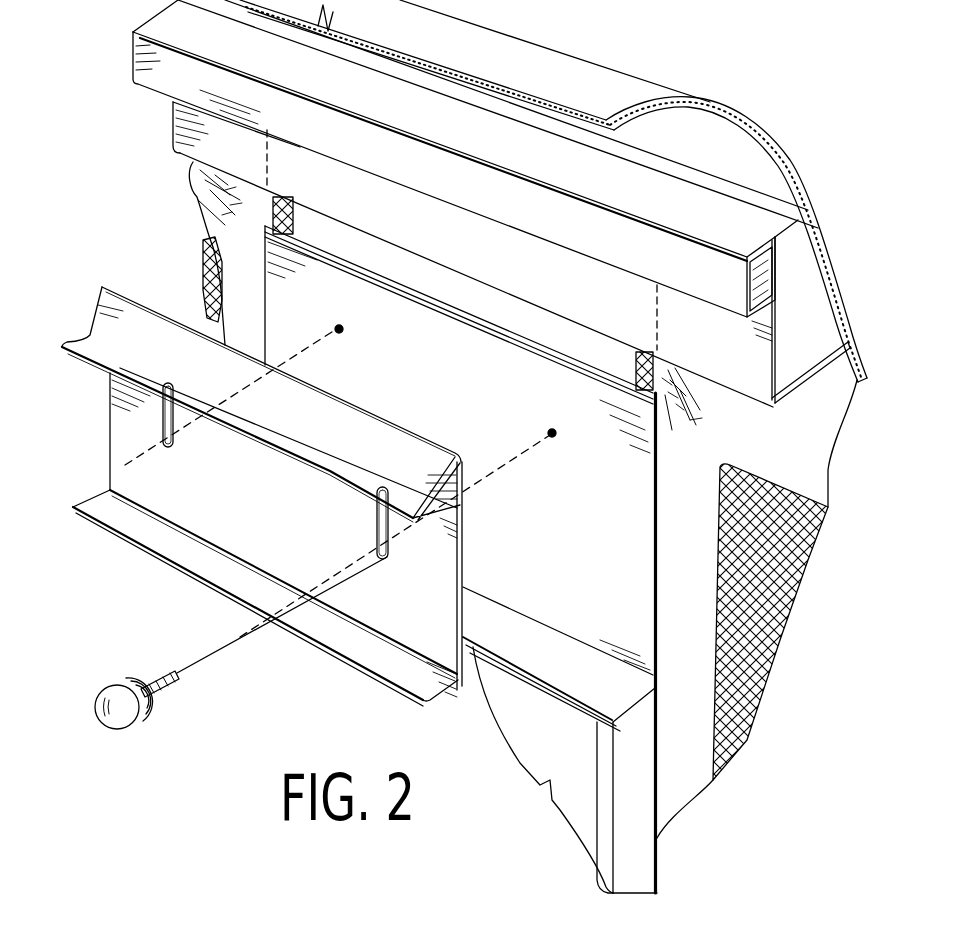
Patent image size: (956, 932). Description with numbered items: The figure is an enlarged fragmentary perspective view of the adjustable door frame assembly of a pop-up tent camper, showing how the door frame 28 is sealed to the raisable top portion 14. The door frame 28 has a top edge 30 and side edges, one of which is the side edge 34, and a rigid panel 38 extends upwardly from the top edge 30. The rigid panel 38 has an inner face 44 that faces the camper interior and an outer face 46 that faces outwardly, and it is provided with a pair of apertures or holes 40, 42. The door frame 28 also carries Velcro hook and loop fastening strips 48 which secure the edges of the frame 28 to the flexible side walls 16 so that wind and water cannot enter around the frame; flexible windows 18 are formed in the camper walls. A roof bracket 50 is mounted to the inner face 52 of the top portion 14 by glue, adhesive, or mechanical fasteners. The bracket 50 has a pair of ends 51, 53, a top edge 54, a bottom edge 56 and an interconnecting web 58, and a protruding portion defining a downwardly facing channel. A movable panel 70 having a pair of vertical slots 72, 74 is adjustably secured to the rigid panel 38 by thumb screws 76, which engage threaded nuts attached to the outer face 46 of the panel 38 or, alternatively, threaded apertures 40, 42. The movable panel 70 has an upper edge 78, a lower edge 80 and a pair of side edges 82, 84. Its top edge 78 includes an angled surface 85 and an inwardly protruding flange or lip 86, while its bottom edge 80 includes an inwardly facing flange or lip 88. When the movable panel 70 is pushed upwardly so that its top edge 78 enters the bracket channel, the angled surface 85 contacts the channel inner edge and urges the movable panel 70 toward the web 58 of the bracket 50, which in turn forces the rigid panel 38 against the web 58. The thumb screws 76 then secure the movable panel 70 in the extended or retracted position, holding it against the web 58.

The top portion 14 is at (728, 107).
The flexible side walls 16 is at (827, 480).
The flexible windows 18 is at (797, 577).
The door frame 28 is at (657, 786).
The top edge 30 is at (570, 670).
The side edge 34 is at (633, 862).
The rigid panel 38 is at (660, 503).
The aperture 40 is at (553, 428).
The aperture 42 is at (342, 325).
The inner face 44 is at (605, 515).
The outer face 46 is at (455, 307).
The hook and loop fastening strips 48 is at (690, 325).
The roof bracket 50 is at (805, 393).
The end 51 is at (780, 310).
The inner face 52 is at (790, 257).
The end 53 is at (173, 105).
The top edge 54 is at (730, 220).
The bottom edge 56 is at (850, 375).
The web 58 is at (750, 350).
The movable panel 70 is at (285, 496).
The vertical slot 72 is at (388, 560).
The vertical slot 74 is at (118, 527).
The thumb screw 76 is at (133, 730).
The upper edge 78 is at (327, 390).
The lower edge 80 is at (152, 558).
The side edge 82 is at (462, 558).
The side edge 84 is at (110, 405).
The angled surface 85 is at (373, 445).
The inwardly protruding flange or lip 86 is at (265, 450).
The inwardly facing flange or lip 88 is at (192, 577).